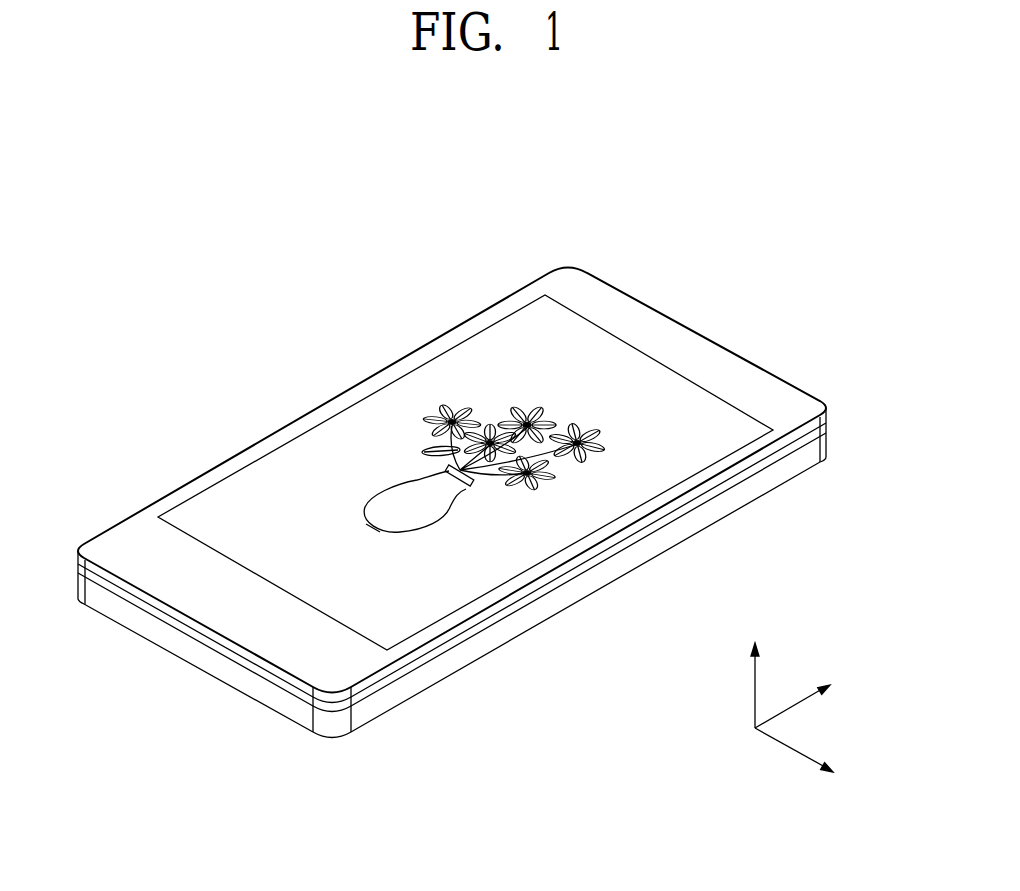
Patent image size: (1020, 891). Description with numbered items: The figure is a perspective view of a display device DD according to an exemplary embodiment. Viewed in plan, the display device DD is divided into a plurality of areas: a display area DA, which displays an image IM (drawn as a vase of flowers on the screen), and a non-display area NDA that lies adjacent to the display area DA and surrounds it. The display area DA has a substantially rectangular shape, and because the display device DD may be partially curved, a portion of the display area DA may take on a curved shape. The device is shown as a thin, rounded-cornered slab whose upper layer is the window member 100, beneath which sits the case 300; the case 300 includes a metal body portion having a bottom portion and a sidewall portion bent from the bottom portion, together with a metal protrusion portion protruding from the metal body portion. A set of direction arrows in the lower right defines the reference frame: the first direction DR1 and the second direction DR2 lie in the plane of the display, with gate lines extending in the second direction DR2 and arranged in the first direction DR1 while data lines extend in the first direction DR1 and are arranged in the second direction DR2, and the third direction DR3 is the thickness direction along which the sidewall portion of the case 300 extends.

The display device DD is at (692, 191).
The window member 100 is at (828, 409).
The case 300 is at (828, 446).
The display area DA is at (627, 377).
The non-display area NDA is at (731, 372).
The image IM is at (437, 412).
The first direction DR1 is at (815, 759).
The second direction DR2 is at (814, 699).
The third direction DR3 is at (754, 669).